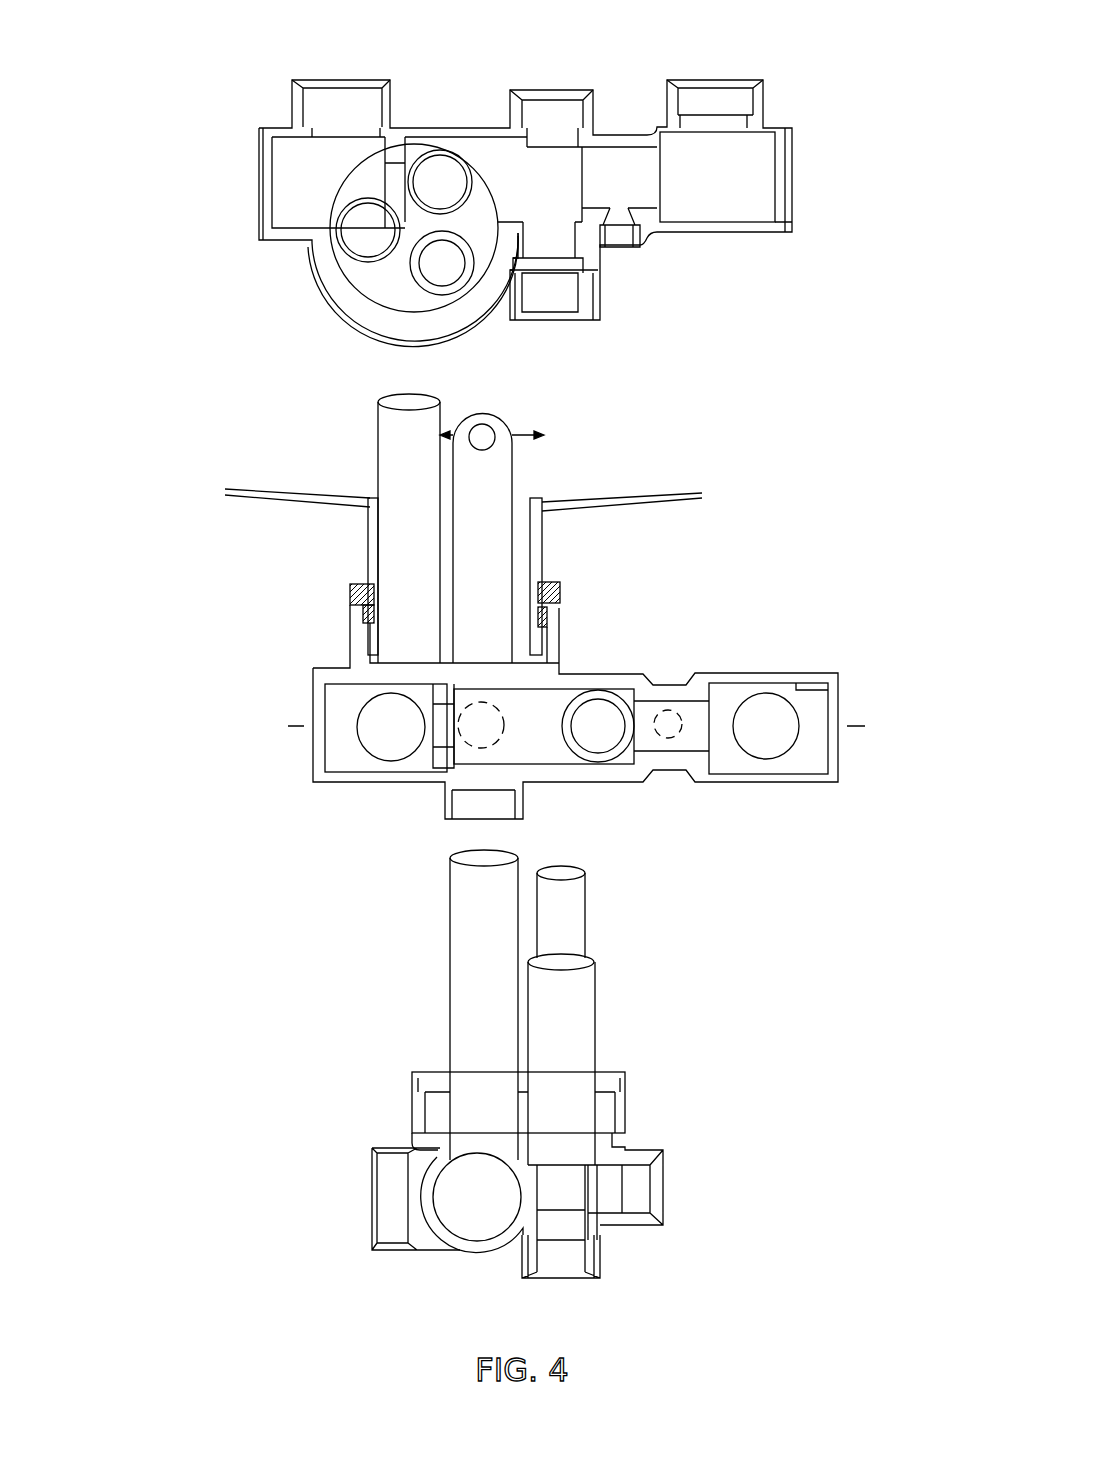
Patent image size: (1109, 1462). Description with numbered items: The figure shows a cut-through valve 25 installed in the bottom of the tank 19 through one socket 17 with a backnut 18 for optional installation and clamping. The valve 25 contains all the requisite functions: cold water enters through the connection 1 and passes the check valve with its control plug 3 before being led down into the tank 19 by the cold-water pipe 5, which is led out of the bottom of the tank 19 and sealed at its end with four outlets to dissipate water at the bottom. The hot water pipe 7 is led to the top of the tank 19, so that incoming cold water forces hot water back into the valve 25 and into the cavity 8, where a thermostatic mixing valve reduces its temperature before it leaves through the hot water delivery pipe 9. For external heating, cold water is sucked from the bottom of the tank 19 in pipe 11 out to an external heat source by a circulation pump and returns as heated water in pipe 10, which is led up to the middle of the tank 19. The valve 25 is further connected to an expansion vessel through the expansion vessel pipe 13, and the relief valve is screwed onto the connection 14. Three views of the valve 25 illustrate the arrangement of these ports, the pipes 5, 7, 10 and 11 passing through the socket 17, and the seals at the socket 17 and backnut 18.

The cold water connection 1 is at (708, 78).
The control plug 3 is at (625, 247).
The cold-water pipe 5 is at (438, 150).
The hot water pipe 7 is at (312, 243).
The cavity 8 is at (467, 1200).
The hot water delivery pipe 9 is at (337, 80).
The heated water pipe 10 is at (468, 293).
The cold water suction pipe 11 is at (440, 285).
The expansion vessel pipe 13 is at (543, 88).
The relief valve connection 14 is at (547, 322).
The socket 17 is at (543, 546).
The backnut 18 is at (562, 589).
The tank 19 is at (632, 503).
The valve 25 is at (562, 635).